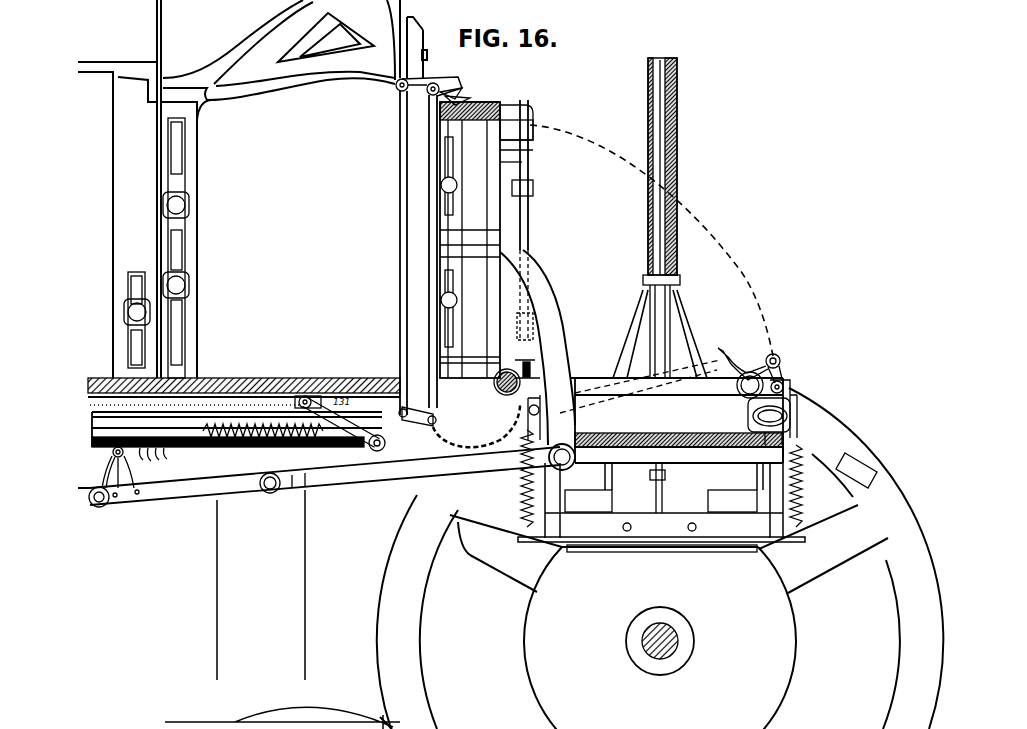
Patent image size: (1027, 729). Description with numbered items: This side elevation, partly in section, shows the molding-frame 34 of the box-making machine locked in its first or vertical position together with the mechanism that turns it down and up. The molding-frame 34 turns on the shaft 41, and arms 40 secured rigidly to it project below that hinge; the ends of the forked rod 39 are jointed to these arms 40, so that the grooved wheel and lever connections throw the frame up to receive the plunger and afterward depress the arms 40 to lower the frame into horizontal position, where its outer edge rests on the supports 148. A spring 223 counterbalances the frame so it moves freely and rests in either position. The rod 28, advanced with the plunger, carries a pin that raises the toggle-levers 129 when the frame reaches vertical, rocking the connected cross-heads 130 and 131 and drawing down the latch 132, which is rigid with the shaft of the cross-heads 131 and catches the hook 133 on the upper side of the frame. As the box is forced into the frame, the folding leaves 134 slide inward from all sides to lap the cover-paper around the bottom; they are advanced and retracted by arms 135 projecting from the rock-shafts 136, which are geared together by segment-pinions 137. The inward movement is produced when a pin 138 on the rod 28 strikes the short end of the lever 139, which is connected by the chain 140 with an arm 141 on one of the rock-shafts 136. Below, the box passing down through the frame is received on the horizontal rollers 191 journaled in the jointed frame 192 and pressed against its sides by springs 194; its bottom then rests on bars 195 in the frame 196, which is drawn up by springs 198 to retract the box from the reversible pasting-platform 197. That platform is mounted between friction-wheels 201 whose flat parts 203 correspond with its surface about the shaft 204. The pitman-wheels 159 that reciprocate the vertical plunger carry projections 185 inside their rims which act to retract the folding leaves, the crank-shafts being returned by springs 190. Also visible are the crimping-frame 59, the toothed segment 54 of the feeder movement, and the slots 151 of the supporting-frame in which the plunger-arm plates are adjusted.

The rod 28 is at (237, 429).
The molding-frame 34 is at (486, 240).
The forked rod 39 is at (326, 475).
The arms 40 is at (562, 360).
The shaft 41 is at (500, 386).
The toothed segment 54 is at (137, 320).
The crimping-frame 59 is at (179, 248).
The toggle-levers 129 is at (384, 438).
The cross-head 130 is at (417, 416).
The cross-head 131 is at (424, 86).
The latch 132 is at (460, 86).
The hook 133 is at (468, 98).
The folding leaves 134 is at (516, 153).
The arms 135 is at (515, 250).
The rock-shafts 136 is at (530, 240).
The segment-pinions 137 is at (646, 386).
The pin 138 is at (780, 356).
The lever 139 is at (533, 188).
The chain 140 is at (476, 428).
The arm 141 is at (527, 400).
The supports 148 is at (772, 420).
The slots 151 is at (660, 218).
The pitman-wheels 159 is at (415, 537).
The projections 185 is at (845, 463).
The springs 190 is at (782, 384).
The horizontal rollers 191 is at (676, 420).
The jointed frame 192 is at (679, 455).
The springs 194 is at (663, 500).
The bars 195 is at (659, 523).
The frame 196 is at (664, 500).
The reversible pasting-platform 197 is at (519, 479).
The springs 198 is at (807, 486).
The friction-wheels 201 is at (660, 638).
The flat parts 203 is at (661, 545).
The shaft 204 is at (680, 641).
The spring 223 is at (153, 456).